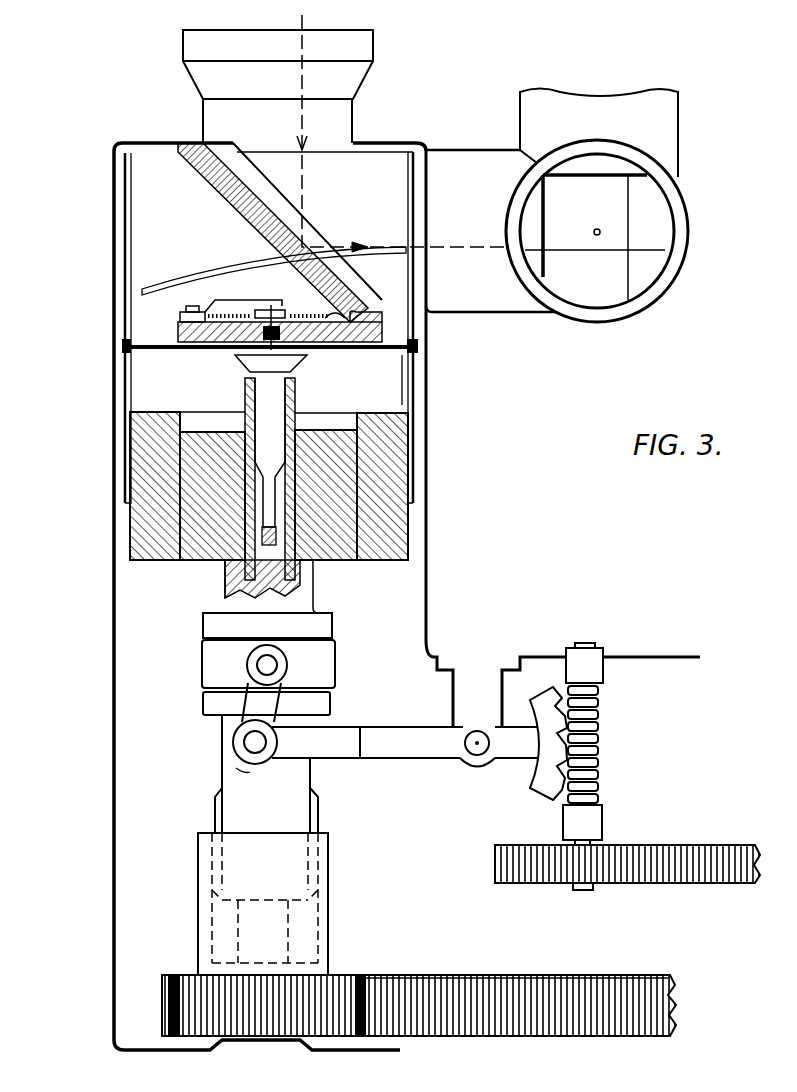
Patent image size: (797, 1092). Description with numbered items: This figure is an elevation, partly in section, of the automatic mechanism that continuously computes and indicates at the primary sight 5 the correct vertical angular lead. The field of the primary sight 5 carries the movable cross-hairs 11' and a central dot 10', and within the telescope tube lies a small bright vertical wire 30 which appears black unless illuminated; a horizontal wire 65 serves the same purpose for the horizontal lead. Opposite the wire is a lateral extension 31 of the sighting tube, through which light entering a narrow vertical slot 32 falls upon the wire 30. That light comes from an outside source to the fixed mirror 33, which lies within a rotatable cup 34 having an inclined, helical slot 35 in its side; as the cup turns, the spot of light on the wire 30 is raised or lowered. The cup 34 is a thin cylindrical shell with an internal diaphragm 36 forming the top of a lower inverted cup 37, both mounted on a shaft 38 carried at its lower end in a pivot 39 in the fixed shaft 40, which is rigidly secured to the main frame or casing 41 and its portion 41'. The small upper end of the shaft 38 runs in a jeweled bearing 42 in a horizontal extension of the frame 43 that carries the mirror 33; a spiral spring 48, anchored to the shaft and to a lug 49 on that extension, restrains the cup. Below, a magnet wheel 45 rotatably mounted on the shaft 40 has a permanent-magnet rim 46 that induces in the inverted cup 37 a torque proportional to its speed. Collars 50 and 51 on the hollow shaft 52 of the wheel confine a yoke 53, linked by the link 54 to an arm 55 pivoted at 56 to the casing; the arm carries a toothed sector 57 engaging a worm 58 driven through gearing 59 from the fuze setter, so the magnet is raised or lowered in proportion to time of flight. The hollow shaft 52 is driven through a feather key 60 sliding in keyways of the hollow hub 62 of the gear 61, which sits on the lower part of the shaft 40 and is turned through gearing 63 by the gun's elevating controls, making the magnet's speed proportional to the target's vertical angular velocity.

The main frame or casing 41 is at (377, 610).
The frame extension 41' is at (599, 115).
The narrow vertical slot 32 is at (430, 205).
The primary sight 5 is at (677, 203).
The horizontal narrow strip or wire 65 is at (605, 174).
The vertical wire or narrow strip 30 is at (547, 273).
The movable cross-hairs 11' is at (637, 237).
The dot 10' is at (672, 232).
The lateral extension of the sighting tube 31 is at (497, 302).
The rotatable cup 34 is at (135, 217).
The fixed mirror 33 is at (222, 172).
The inclined slot 35 is at (405, 249).
The lug 49 is at (180, 316).
The jeweled bearing 42 is at (258, 331).
The frame 43 is at (345, 322).
The spiral spring 48 is at (385, 334).
The internal diaphragm 36 is at (388, 354).
The lower inverted cup 37 is at (408, 400).
The shaft 38 is at (248, 367).
The pivot 39 is at (265, 535).
The magnet rim 46 is at (408, 525).
The magnet wheel 45 is at (313, 563).
The hollow shaft 52 is at (300, 596).
The fixed or stationary shaft 40 is at (223, 576).
The collar 50 is at (213, 623).
The yoke or ring 53 is at (210, 662).
The collar 51 is at (218, 698).
The link 54 is at (252, 712).
The arm 55 is at (412, 716).
The pivot 56 is at (477, 743).
The toothed sector 57 is at (543, 700).
The worm 58 is at (597, 708).
The gearing 59 is at (647, 850).
The feather key connection 60 is at (215, 818).
The hollow hub 62 is at (210, 898).
The gear 61 is at (183, 998).
The gearing 63 is at (396, 1023).